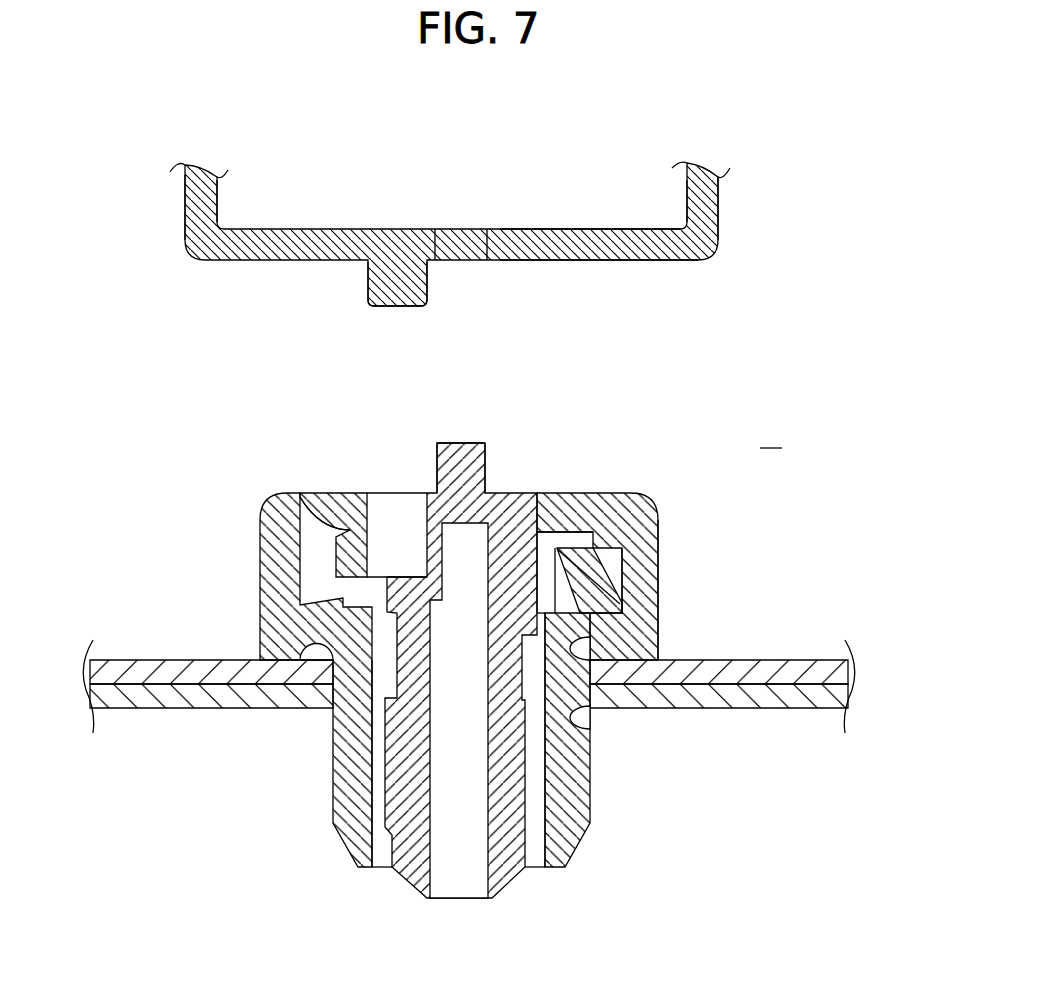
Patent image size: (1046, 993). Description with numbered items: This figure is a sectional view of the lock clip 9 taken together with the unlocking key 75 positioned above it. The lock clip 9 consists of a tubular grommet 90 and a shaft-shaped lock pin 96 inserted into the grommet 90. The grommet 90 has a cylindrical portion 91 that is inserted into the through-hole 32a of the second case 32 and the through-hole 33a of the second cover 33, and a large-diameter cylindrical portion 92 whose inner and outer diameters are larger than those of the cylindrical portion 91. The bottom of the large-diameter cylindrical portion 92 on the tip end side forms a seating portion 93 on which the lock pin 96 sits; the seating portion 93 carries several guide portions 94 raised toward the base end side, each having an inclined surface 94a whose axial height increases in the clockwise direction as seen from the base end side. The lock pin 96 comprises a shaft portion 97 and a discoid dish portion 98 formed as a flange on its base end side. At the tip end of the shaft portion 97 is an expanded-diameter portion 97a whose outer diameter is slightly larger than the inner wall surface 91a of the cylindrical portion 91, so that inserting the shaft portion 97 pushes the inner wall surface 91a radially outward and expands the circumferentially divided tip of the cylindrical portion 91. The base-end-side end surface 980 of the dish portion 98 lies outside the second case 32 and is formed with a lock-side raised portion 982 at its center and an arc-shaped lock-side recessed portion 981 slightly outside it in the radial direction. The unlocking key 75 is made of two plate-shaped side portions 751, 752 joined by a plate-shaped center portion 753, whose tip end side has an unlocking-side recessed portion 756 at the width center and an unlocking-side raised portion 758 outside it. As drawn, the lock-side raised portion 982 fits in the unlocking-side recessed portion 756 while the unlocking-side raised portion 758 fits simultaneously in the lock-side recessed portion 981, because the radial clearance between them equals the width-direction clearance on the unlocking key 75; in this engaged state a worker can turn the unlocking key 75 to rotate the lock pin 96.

The unlocking key 75 is at (748, 126).
The side portion 751 is at (186, 192).
The side portion 752 is at (716, 190).
The center portion 753 is at (575, 248).
The unlocking-side recessed portion 756 is at (464, 248).
The unlocking-side raised portion 758 is at (383, 275).
The lock clip 9 is at (771, 432).
The grommet 90 is at (655, 506).
The cylindrical portion 91 is at (586, 789).
The inner wall surface 91a is at (546, 797).
The large-diameter cylindrical portion 92 is at (659, 562).
The seating portion 93 is at (580, 600).
The guide portion 94 is at (613, 579).
The inclined surface 94a is at (600, 578).
The lock pin 96 is at (412, 417).
The shaft portion 97 is at (405, 642).
The expanded-diameter portion 97a is at (392, 790).
The dish portion 98 is at (315, 494).
The end surface 980 is at (336, 520).
The lock-side recessed portion 981 is at (390, 572).
The lock-side raised portion 982 is at (473, 470).
The second case 32 is at (840, 702).
The through-hole 32a is at (578, 714).
The second cover 33 is at (848, 669).
The through-hole 33a is at (577, 654).